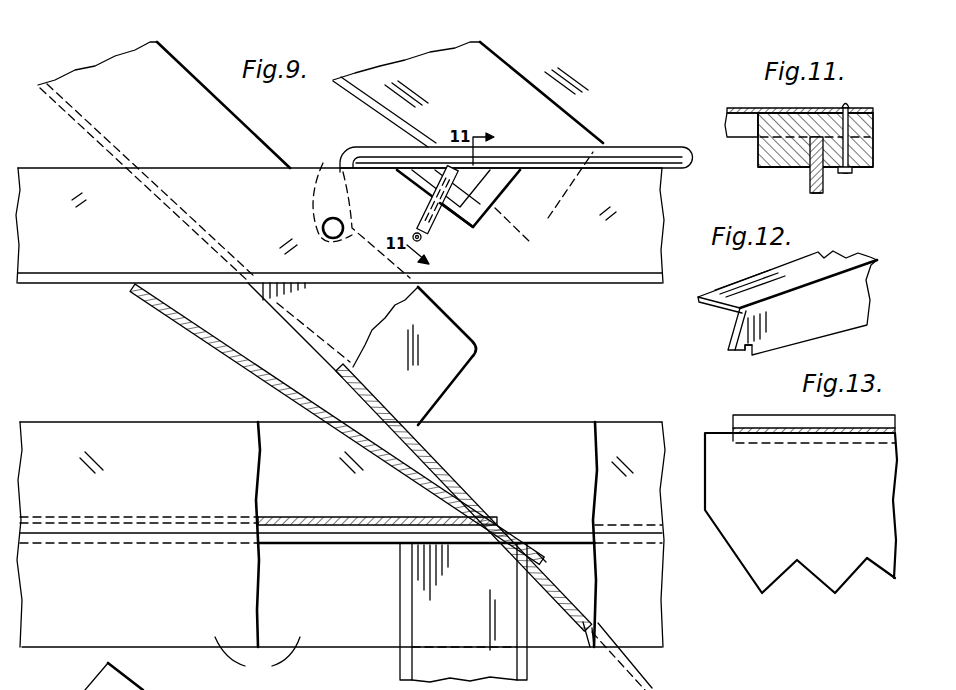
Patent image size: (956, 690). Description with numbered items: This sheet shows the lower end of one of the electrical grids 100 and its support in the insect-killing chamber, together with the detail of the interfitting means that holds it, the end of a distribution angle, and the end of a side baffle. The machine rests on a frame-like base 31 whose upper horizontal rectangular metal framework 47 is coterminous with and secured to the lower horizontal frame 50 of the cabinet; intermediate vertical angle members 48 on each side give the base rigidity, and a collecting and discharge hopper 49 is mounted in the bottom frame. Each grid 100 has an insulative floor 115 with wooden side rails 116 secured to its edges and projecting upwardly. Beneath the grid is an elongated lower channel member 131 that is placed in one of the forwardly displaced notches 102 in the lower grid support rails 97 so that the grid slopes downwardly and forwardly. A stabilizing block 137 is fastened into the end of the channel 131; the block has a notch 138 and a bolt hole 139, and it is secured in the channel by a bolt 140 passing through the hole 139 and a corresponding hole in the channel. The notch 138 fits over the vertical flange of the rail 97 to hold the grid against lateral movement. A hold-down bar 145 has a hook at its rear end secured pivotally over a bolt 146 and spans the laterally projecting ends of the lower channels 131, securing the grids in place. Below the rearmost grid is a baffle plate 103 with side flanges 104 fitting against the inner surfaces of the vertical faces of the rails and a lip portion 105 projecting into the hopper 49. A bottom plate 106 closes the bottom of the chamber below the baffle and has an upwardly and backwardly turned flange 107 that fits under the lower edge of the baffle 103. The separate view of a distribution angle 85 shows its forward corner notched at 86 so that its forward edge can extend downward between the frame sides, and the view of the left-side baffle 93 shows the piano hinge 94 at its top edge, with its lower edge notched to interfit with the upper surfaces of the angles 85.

In FIG. 9, the frame-like base 31 is at (80, 420).
In FIG. 9, the upper horizontal rectangular metal framework 47 is at (257, 657).
In FIG. 9, the intermediate vertical angle members 48 is at (412, 657).
In FIG. 9, the collecting and discharge hopper 49 is at (620, 660).
In FIG. 9, the lower horizontal frame 50 is at (610, 433).
In FIG. 12, the distribution angles 85 is at (840, 260).
In FIG. 12, the notched forward corners 86 is at (745, 352).
In FIG. 13, the left-side baffle 93 is at (727, 460).
In FIG. 13, the piano hinge 94 is at (766, 425).
In FIG. 9, the lower grid support rails 97 is at (568, 268).
In FIG. 11, the lower grid support rails 97 is at (816, 194).
In FIG. 9, the electrical grids 100 is at (545, 82).
In FIG. 9, the notches 102 is at (420, 170).
In FIG. 9, the baffle plate 103 is at (400, 413).
In FIG. 9, the side flanges 104 is at (302, 312).
In FIG. 9, the lip portion 105 is at (540, 548).
In FIG. 9, the bottom plate 106 is at (278, 517).
In FIG. 9, the upwardly and backwardly turned flange 107 is at (242, 365).
In FIG. 9, the grid floor 115 is at (367, 110).
In FIG. 9, the side rails 116 is at (552, 110).
In FIG. 9, the lower channel member 131 is at (465, 208).
In FIG. 11, the lower channel member 131 is at (760, 108).
In FIG. 9, the stabilizing block 137 is at (435, 230).
In FIG. 11, the stabilizing block 137 is at (783, 165).
In FIG. 9, the notch 138 is at (430, 204).
In FIG. 11, the notch 138 is at (828, 108).
In FIG. 9, the bolt hole 139 is at (413, 229).
In FIG. 11, the bolt hole 139 is at (828, 172).
In FIG. 9, the bolt 140 is at (470, 188).
In FIG. 11, the bolt 140 is at (848, 174).
In FIG. 9, the hold-down bars 145 is at (640, 152).
In FIG. 9, the bolt 146 is at (323, 226).